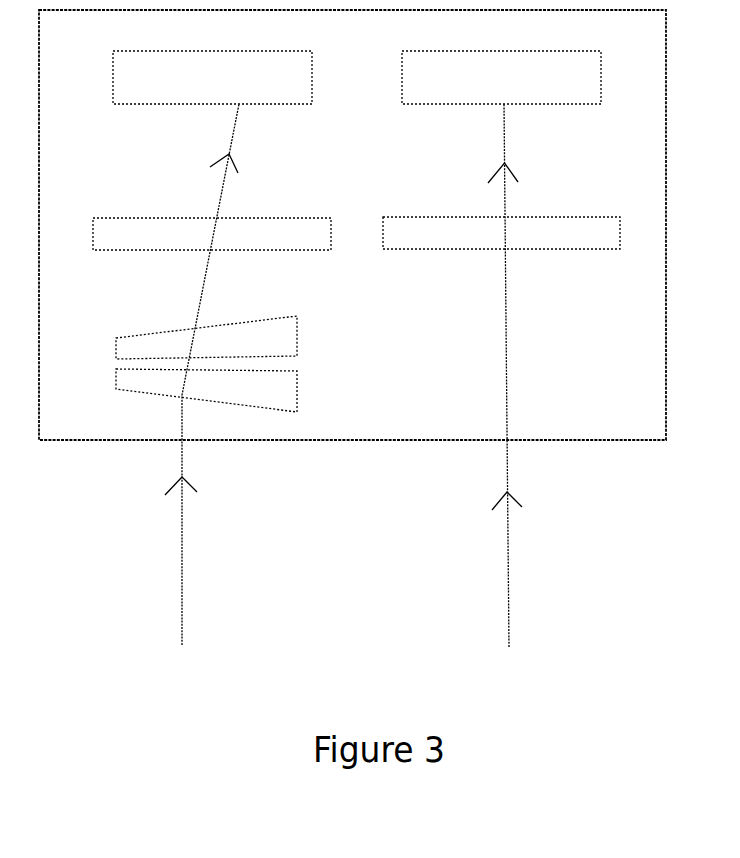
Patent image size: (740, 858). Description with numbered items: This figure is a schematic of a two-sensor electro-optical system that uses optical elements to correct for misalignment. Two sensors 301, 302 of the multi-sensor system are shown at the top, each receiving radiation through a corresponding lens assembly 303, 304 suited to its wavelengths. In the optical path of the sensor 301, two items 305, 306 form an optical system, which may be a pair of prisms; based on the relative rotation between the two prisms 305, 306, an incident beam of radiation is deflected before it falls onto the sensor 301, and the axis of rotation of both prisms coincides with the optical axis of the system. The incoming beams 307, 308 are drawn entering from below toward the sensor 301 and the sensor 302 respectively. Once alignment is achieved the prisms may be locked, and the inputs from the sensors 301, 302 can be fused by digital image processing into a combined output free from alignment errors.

The sensor 301 is at (181, 90).
The sensor 302 is at (464, 90).
The lens assembly 303 is at (257, 246).
The lens assembly 304 is at (556, 246).
The prism 305 is at (240, 350).
The prism 306 is at (240, 402).
The first light beam 307 is at (198, 399).
The second light beam 308 is at (507, 395).